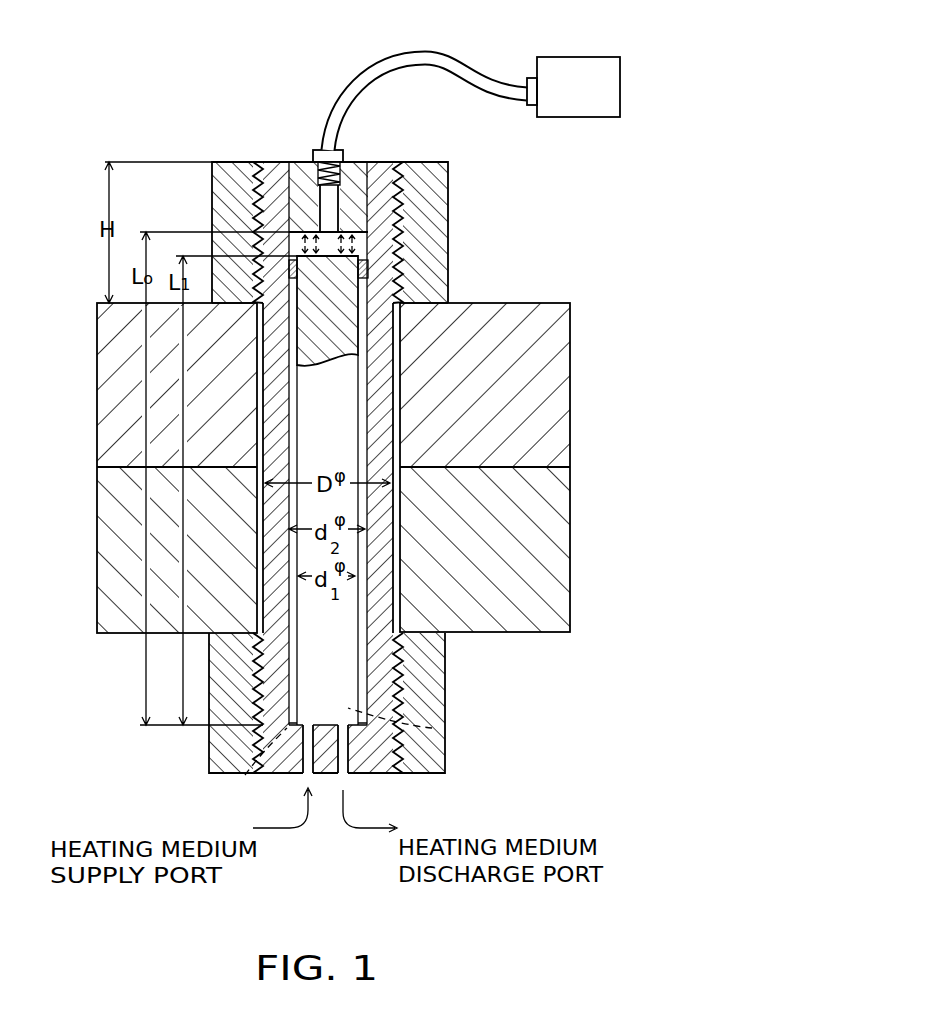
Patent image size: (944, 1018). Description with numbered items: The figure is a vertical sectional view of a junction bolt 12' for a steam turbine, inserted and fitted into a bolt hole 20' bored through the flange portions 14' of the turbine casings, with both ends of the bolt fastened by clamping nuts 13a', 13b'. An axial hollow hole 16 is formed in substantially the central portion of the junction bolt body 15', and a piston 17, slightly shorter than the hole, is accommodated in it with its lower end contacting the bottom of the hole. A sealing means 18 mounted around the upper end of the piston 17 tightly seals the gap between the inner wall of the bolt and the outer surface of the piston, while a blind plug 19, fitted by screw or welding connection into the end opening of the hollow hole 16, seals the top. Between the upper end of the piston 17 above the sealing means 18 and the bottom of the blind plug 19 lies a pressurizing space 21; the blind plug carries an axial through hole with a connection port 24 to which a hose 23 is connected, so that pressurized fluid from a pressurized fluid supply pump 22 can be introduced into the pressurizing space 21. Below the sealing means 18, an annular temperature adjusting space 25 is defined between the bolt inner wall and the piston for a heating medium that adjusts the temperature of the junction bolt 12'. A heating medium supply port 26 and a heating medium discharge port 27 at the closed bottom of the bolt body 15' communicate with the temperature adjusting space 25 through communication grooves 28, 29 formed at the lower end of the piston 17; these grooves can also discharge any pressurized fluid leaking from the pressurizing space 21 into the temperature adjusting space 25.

The junction bolt 12' is at (489, 153).
The clamping nut 13a' is at (367, 232).
The clamping nut 13b' is at (362, 719).
The flange portions 14' is at (361, 468).
The junction bolt body 15' is at (381, 443).
The axial hollow hole 16 is at (364, 371).
The piston 17 is at (343, 676).
The sealing means 18 is at (365, 268).
The blind plug 19 is at (355, 172).
The bolt hole 20' is at (330, 468).
The pressurizing space 21 is at (362, 243).
The pressurized fluid supply pump 22 is at (575, 57).
The hose 23 is at (400, 56).
The connection port 24 is at (320, 167).
The annular temperature adjusting space 25 is at (292, 656).
The heating medium supply port 26 is at (303, 772).
The heating medium discharge port 27 is at (348, 773).
The communication groove 28 is at (432, 728).
The communication groove 29 is at (245, 775).